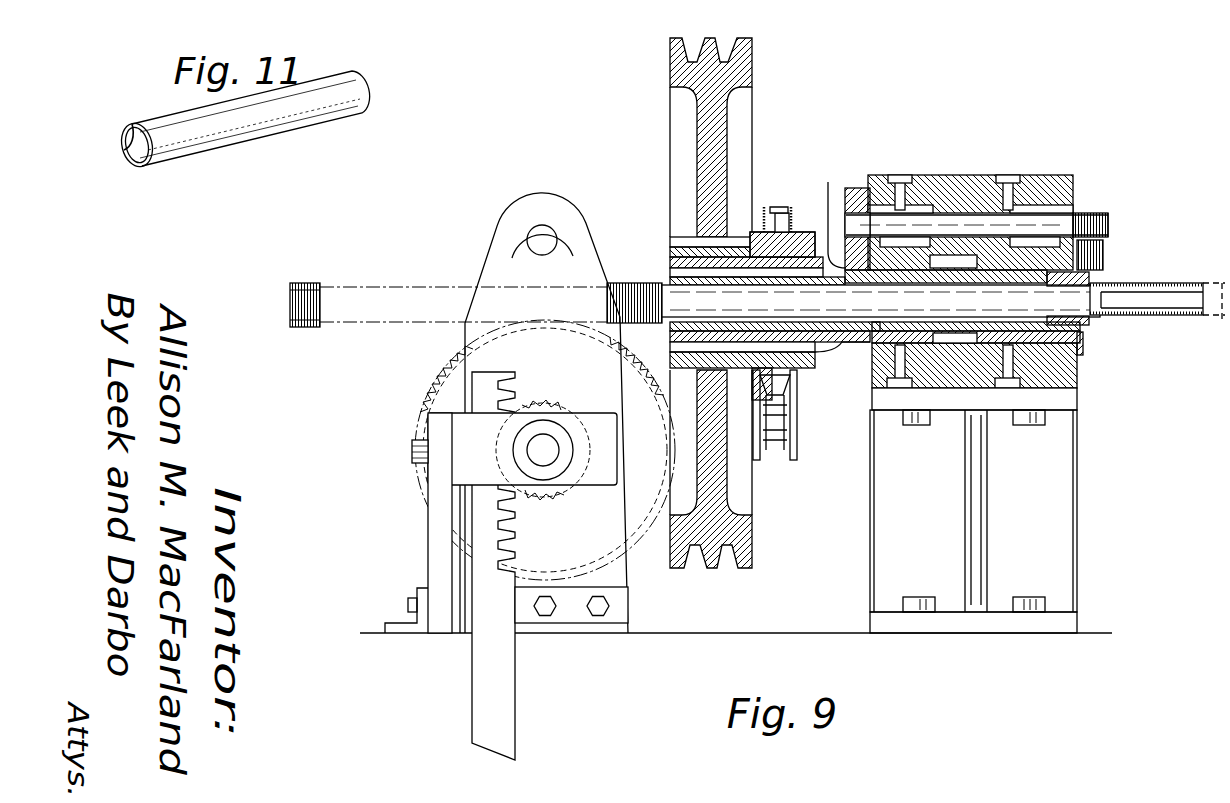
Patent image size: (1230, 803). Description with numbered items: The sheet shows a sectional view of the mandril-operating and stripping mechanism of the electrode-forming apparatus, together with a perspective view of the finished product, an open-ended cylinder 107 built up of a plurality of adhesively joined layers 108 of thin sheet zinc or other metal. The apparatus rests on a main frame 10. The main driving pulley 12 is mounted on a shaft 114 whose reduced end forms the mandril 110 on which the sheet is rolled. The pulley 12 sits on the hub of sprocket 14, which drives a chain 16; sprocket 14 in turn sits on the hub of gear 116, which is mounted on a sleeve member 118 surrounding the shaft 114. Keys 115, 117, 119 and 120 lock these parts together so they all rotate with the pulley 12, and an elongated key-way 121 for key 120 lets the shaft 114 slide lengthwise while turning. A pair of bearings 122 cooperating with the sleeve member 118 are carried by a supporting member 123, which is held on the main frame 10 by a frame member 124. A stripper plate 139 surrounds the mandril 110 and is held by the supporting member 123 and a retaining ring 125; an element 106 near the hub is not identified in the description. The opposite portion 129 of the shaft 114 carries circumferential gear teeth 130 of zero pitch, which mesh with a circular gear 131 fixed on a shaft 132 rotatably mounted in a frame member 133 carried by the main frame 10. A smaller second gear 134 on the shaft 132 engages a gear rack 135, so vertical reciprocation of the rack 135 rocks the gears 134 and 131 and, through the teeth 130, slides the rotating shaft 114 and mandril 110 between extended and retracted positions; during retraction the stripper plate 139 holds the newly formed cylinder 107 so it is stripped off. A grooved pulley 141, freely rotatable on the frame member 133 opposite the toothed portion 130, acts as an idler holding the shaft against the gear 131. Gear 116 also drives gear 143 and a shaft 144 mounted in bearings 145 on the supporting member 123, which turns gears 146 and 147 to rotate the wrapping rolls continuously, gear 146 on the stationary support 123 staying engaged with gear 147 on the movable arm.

In FIG. 9, the main frame 10 is at (780, 631).
In FIG. 9, the main driving pulley 12 is at (745, 80).
In FIG. 9, the sprocket 14 is at (814, 230).
In FIG. 9, the chain 16 is at (795, 460).
In FIG. 9, the hub 106 is at (862, 342).
In FIG. 11, the open ended cylinder 107 is at (126, 164).
In FIG. 9, the open ended cylinder 107 is at (1178, 284).
In FIG. 11, the adhesively joined layers 108 is at (135, 128).
In FIG. 9, the mandril 110 is at (1104, 310).
In FIG. 9, the shaft 114 is at (881, 301).
In FIG. 9, the key 115 is at (670, 241).
In FIG. 9, the gear 116 is at (842, 215).
In FIG. 9, the key 117 is at (685, 355).
In FIG. 9, the sleeve member 118 is at (670, 275).
In FIG. 9, the key 119 is at (670, 252).
In FIG. 9, the key 120 is at (881, 301).
In FIG. 9, the elongated key-way 121 is at (880, 338).
In FIG. 9, the bearings 122 is at (985, 345).
In FIG. 9, the supporting member 123 is at (1018, 175).
In FIG. 9, the frame member 124 is at (1068, 502).
In FIG. 9, the retaining ring 125 is at (1077, 356).
In FIG. 9, the part of shaft 129 is at (445, 280).
In FIG. 9, the gear teeth 130 is at (306, 284).
In FIG. 9, the circular gear 131 is at (428, 380).
In FIG. 9, the shaft 132 is at (556, 458).
In FIG. 9, the frame member 133 is at (622, 588).
In FIG. 9, the second gear 134 is at (548, 495).
In FIG. 9, the gear rack 135 is at (522, 573).
In FIG. 9, the stripper plate 139 is at (1080, 324).
In FIG. 9, the grooved pulley 141 is at (560, 200).
In FIG. 9, the gear 143 is at (858, 190).
In FIG. 9, the shaft 144 is at (952, 225).
In FIG. 9, the bearings 145 is at (925, 200).
In FIG. 9, the gear 146 is at (1108, 217).
In FIG. 9, the gear 147 is at (1104, 256).